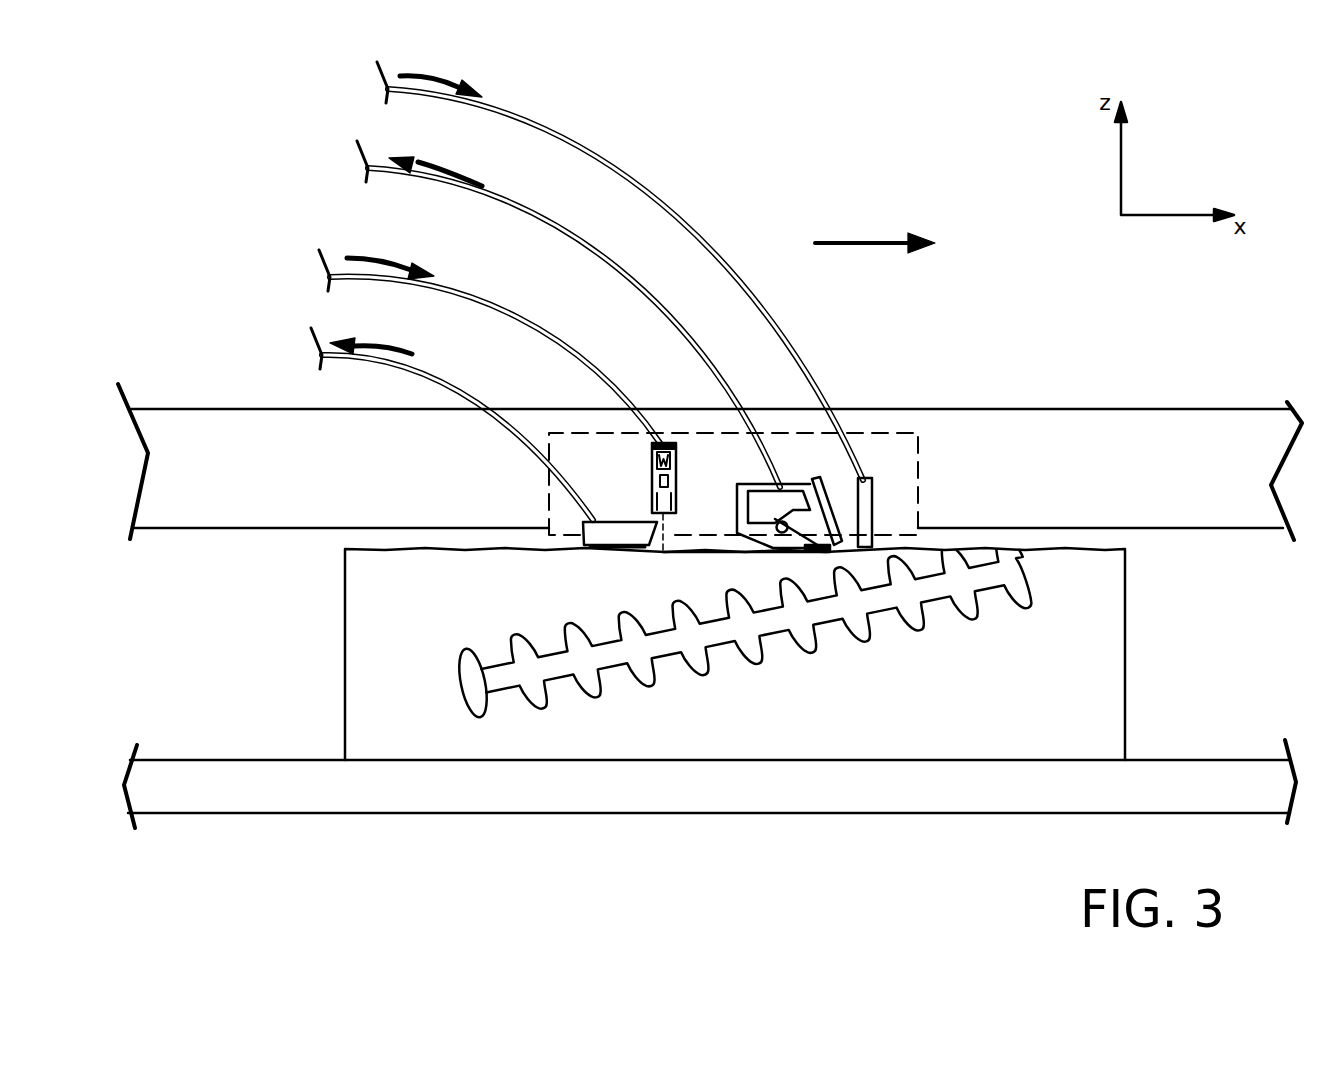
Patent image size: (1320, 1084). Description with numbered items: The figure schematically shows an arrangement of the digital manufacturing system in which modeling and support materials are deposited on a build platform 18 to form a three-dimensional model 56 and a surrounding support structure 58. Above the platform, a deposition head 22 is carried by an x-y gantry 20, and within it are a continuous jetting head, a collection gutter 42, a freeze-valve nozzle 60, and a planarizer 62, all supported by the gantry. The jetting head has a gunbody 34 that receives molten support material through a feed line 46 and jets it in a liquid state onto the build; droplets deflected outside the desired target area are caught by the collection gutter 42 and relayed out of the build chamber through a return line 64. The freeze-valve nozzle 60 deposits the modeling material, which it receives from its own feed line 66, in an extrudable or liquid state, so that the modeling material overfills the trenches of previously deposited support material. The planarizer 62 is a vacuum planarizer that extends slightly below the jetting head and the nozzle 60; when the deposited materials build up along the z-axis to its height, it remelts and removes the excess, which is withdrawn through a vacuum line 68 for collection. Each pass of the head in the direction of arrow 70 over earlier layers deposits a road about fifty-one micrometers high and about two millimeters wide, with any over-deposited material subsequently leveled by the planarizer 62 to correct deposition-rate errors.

The build platform 18 is at (415, 798).
The x-y gantry 20 is at (1129, 421).
The deposition head 22 is at (912, 432).
The gunbody 34 is at (677, 452).
The collection gutter 42 is at (641, 520).
The feed line 46 is at (482, 298).
The 3D model 56 is at (1025, 580).
The support structure 58 is at (1108, 691).
The freeze-valve nozzle 60 is at (872, 490).
The planarizer 62 is at (787, 484).
The return line 64 is at (437, 373).
The feed line 66 is at (597, 160).
The vacuum line 68 is at (551, 224).
The arrow 70 is at (845, 241).